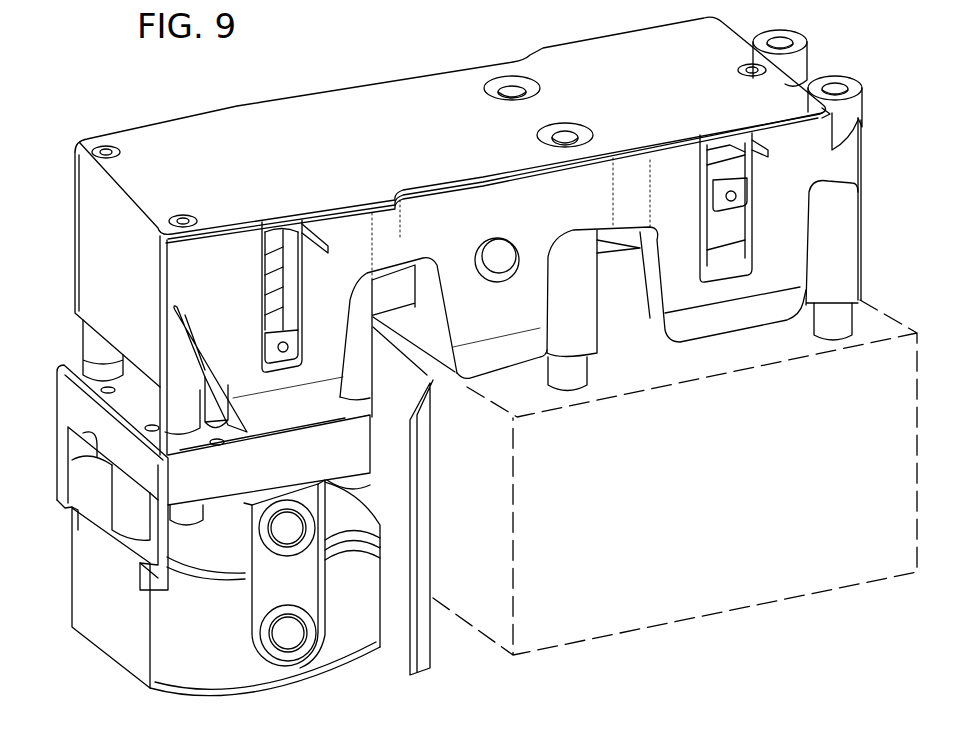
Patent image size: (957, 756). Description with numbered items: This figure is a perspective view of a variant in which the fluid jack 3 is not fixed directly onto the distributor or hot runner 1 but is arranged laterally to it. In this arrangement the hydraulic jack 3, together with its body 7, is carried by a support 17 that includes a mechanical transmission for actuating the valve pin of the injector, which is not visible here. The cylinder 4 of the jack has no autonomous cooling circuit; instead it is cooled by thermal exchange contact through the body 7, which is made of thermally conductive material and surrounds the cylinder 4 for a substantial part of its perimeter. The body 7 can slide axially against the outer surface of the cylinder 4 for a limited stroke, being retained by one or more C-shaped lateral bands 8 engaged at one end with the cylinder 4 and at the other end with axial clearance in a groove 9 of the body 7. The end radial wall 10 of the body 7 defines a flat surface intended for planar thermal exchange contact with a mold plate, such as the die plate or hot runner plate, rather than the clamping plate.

The distributor or hot runner 1 is at (813, 575).
The fluid jack 3 is at (97, 491).
The cylinder 4 is at (268, 582).
The body 7 is at (102, 626).
The C-shaped lateral band 8 is at (60, 405).
The groove 9 is at (332, 566).
The end radial wall 10 is at (227, 702).
The support 17 is at (412, 104).